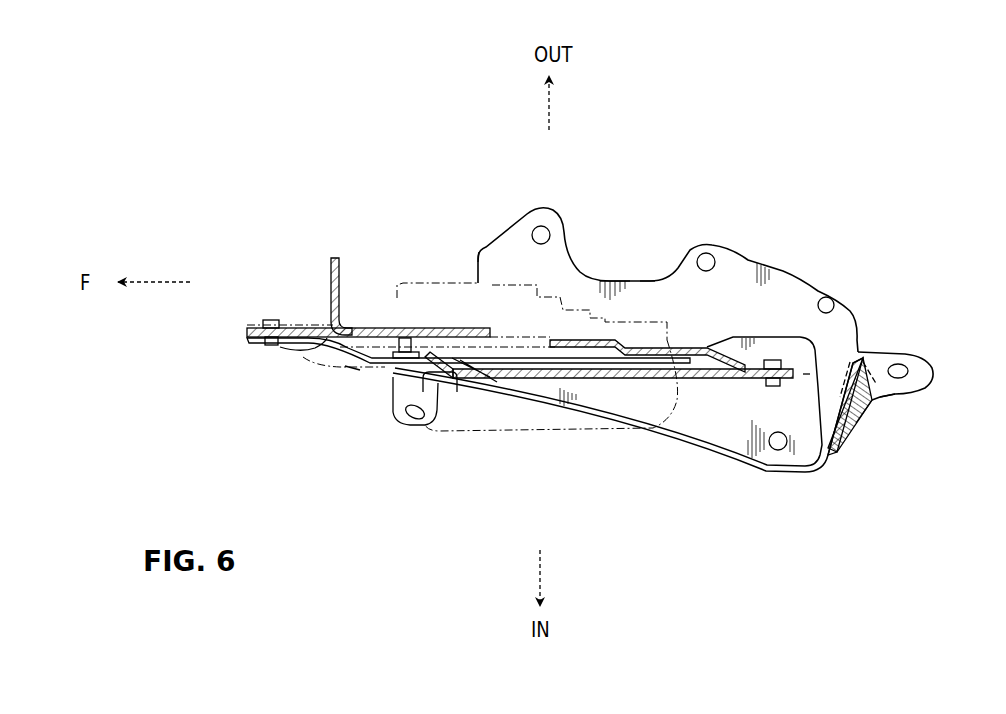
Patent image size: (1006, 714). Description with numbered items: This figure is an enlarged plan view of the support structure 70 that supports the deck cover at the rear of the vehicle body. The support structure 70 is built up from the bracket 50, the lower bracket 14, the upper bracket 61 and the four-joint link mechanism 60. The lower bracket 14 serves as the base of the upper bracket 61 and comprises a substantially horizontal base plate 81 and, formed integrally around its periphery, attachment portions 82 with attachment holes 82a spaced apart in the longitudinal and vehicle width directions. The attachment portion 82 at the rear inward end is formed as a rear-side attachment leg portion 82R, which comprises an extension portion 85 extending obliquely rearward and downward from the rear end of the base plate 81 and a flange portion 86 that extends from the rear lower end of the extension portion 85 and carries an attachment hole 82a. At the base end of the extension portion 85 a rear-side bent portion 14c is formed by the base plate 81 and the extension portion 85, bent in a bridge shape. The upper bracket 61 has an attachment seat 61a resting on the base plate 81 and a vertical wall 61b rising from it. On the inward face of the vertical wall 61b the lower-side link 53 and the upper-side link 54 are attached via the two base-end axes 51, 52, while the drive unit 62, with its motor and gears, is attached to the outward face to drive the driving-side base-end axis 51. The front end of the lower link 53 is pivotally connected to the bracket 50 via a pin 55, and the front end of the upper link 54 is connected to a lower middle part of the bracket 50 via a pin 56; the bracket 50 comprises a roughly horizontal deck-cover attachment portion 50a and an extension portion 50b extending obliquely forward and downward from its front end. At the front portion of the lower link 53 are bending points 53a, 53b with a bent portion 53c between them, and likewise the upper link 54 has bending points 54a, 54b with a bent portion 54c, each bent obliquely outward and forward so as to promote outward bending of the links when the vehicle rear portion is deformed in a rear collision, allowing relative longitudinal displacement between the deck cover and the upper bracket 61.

The support structure 70 is at (817, 196).
The attachment portion 82 is at (556, 210).
The attachment hole 82a is at (535, 228).
The rear-side attachment leg portion 82R is at (916, 355).
The drive unit 62 is at (480, 243).
The lower bracket 14 is at (622, 276).
The base plate 81 is at (643, 290).
The flange portion 86 is at (893, 390).
The extension portion 85 is at (860, 413).
The rear-side bent portion 14c is at (850, 423).
The upper bracket 61 is at (717, 450).
The attachment seat 61a is at (837, 447).
The vertical wall 61b is at (690, 340).
The four-joint link mechanism 60 is at (805, 374).
The upper-side link 54 is at (722, 380).
The base-end axis 52 is at (775, 387).
The rear-side bending point 54a is at (495, 395).
The front-side bending point 54b is at (396, 400).
The bent portion 54c is at (447, 397).
The lower-side link 53 is at (542, 375).
The rear-side bending point 53a is at (363, 365).
The front-side bending point 53b is at (325, 352).
The bent portion 53c is at (347, 367).
The pin 55 is at (270, 320).
The pin 56 is at (405, 339).
The base-end axis 51 is at (625, 412).
The bracket 50 is at (459, 438).
The deck-cover attachment portion 50a is at (570, 433).
The extension portion 50b is at (317, 363).